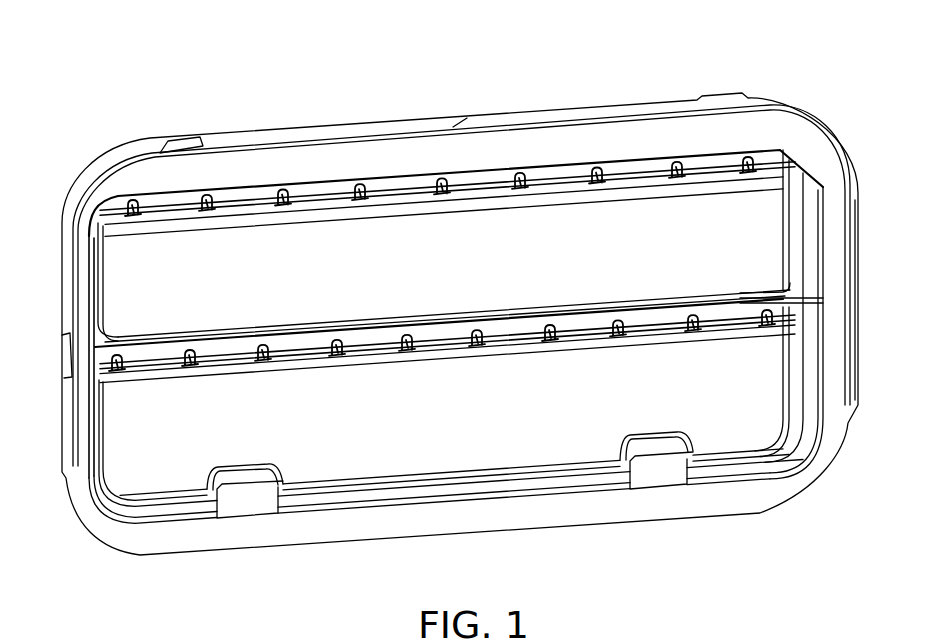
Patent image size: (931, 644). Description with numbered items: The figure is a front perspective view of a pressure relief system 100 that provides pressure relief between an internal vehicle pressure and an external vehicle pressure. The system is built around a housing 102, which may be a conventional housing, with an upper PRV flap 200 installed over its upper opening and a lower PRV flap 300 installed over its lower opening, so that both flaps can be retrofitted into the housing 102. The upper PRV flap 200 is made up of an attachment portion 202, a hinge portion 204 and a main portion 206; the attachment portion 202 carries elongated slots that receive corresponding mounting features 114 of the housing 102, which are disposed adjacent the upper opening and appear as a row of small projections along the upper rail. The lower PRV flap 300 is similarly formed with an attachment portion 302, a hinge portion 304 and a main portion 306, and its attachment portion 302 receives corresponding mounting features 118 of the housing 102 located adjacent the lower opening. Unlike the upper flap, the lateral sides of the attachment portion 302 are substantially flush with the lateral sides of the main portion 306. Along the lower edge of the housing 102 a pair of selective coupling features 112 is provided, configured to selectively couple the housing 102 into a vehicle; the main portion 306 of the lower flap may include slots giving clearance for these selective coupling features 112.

The pressure relief system 100 is at (716, 54).
The housing 102 is at (787, 137).
The selective coupling features 112 is at (250, 490).
The mounting features 114 is at (440, 191).
The mounting features 118 is at (405, 347).
The upper PRV flap 200 is at (780, 233).
The attachment portion 202 is at (182, 198).
The hinge portion 204 is at (170, 227).
The main portion 206 is at (113, 263).
The lower PRV flap 300 is at (778, 422).
The attachment portion 302 is at (145, 357).
The hinge portion 304 is at (218, 365).
The main portion 306 is at (122, 462).